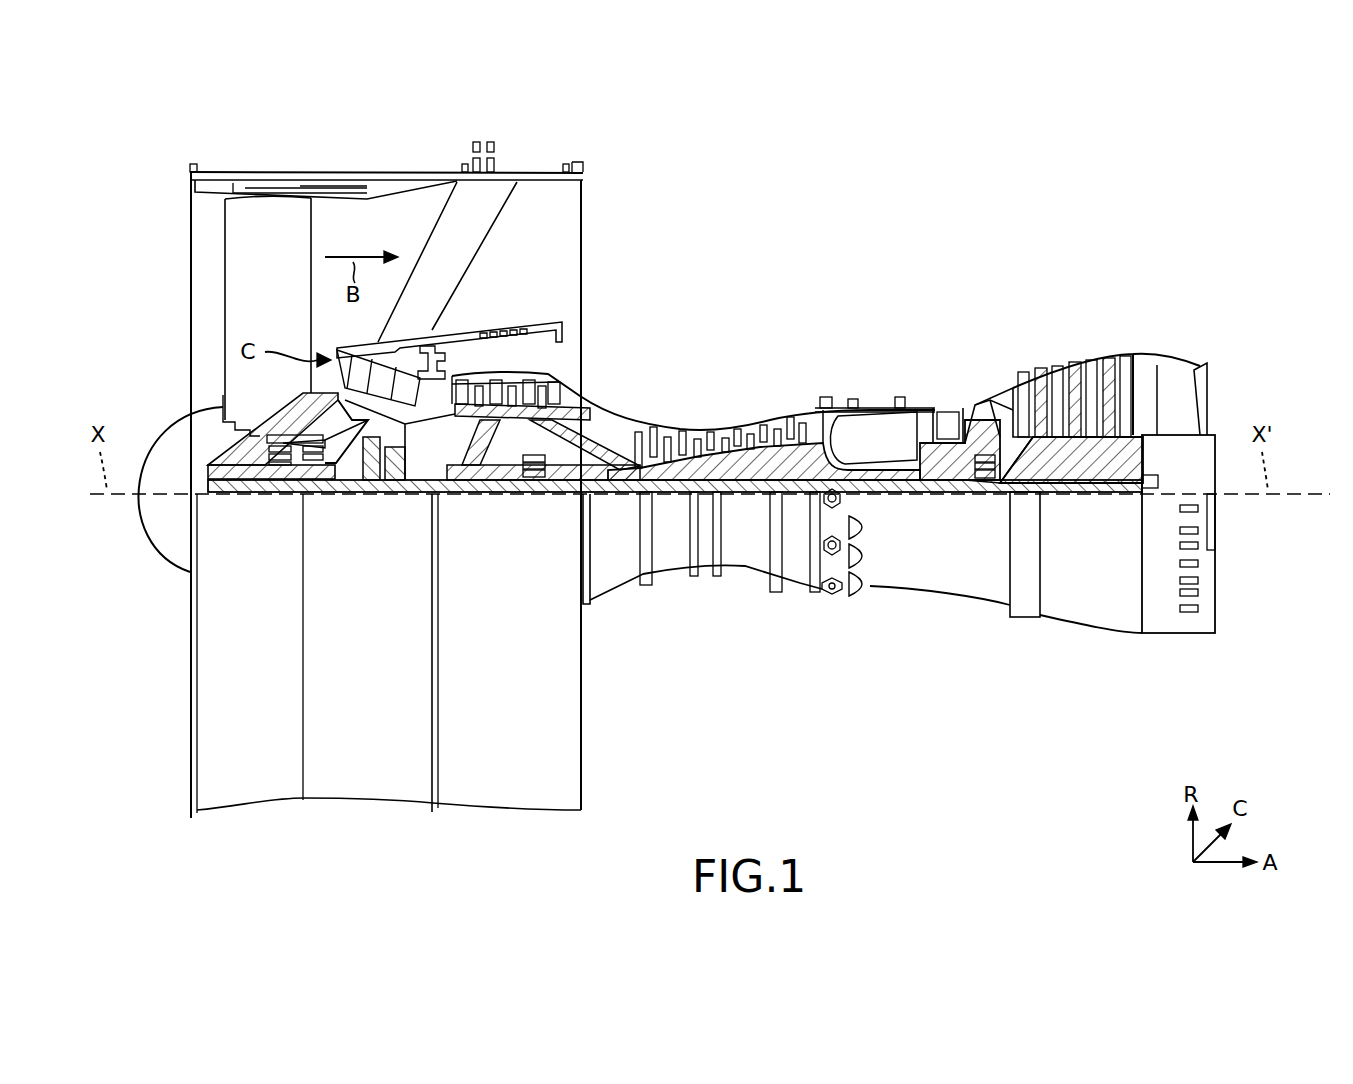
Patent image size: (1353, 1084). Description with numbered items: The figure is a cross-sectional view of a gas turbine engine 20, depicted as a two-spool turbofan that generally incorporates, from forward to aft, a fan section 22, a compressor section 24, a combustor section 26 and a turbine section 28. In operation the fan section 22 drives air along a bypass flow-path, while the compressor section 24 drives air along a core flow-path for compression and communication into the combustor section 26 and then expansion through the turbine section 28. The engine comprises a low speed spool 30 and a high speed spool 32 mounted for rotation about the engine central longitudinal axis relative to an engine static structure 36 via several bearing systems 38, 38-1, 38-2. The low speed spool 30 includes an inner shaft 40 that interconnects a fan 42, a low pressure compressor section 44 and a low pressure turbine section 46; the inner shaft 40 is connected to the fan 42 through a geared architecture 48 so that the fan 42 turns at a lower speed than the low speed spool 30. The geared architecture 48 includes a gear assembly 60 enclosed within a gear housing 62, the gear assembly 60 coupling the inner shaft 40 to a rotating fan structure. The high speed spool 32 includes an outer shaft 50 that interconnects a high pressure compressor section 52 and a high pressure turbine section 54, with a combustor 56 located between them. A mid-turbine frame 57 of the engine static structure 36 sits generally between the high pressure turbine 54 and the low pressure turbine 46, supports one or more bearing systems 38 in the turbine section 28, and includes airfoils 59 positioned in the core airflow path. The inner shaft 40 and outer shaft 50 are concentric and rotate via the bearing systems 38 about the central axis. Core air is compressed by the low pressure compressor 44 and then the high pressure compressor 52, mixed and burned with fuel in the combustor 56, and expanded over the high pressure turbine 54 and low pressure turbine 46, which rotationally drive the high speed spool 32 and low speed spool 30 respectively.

The gas turbine engine 20 is at (932, 212).
The fan section 22 is at (432, 152).
The compressor section 24 is at (440, 286).
The combustor section 26 is at (927, 286).
The turbine section 28 is at (1145, 286).
The low speed spool 30 is at (754, 523).
The high speed spool 32 is at (795, 456).
The engine static structure 36 is at (170, 812).
The bearing system 38 is at (985, 480).
The bearing system 38-1 is at (280, 466).
The bearing system 38-2 is at (535, 477).
The inner shaft 40 is at (604, 496).
The fan 42 is at (276, 302).
The low pressure compressor section 44 is at (515, 385).
The low pressure turbine section 46 is at (1078, 380).
The geared architecture 48 is at (400, 512).
The outer shaft 50 is at (868, 478).
The high pressure compressor section 52 is at (748, 421).
The high pressure turbine section 54 is at (946, 409).
The combustor 56 is at (868, 426).
The mid-turbine frame 57 is at (990, 406).
The airfoils 59 is at (988, 422).
The gear assembly 60 is at (402, 472).
The gear housing 62 is at (403, 431).